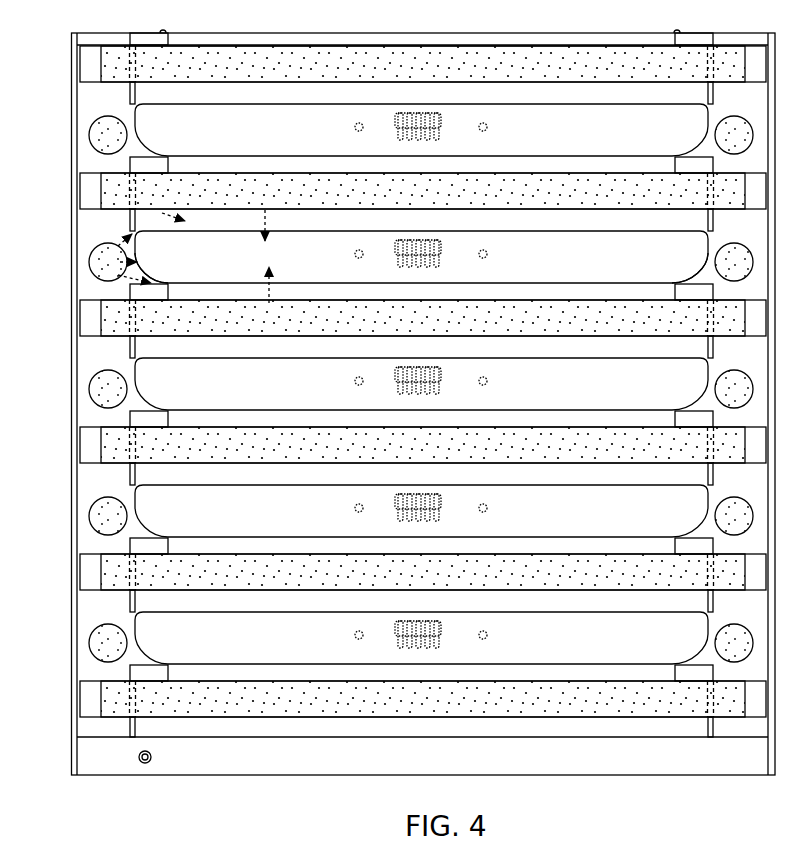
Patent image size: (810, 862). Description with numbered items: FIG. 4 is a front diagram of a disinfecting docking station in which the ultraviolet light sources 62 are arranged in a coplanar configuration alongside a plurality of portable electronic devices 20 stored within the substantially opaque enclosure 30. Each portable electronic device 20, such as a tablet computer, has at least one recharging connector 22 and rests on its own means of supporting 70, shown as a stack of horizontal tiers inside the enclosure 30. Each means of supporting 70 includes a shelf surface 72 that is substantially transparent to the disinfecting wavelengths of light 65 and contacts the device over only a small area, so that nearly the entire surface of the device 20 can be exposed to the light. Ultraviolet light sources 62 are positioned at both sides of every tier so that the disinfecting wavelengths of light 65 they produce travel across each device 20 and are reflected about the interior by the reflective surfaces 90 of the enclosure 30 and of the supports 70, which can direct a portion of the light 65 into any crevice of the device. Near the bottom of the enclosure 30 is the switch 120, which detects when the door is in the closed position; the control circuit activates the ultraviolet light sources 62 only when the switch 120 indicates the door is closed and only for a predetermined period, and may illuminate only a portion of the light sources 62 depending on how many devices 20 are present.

The portable electronic device 20 is at (188, 115).
The recharging connector 22 is at (437, 133).
The enclosure 30 is at (77, 162).
The ultraviolet light source 62 is at (100, 128).
The disinfecting wavelengths of light 65 is at (180, 226).
The means of supporting 70 is at (152, 301).
The shelf surface 72 is at (167, 282).
The reflective surface 90 is at (312, 197).
The switch 120 is at (140, 764).